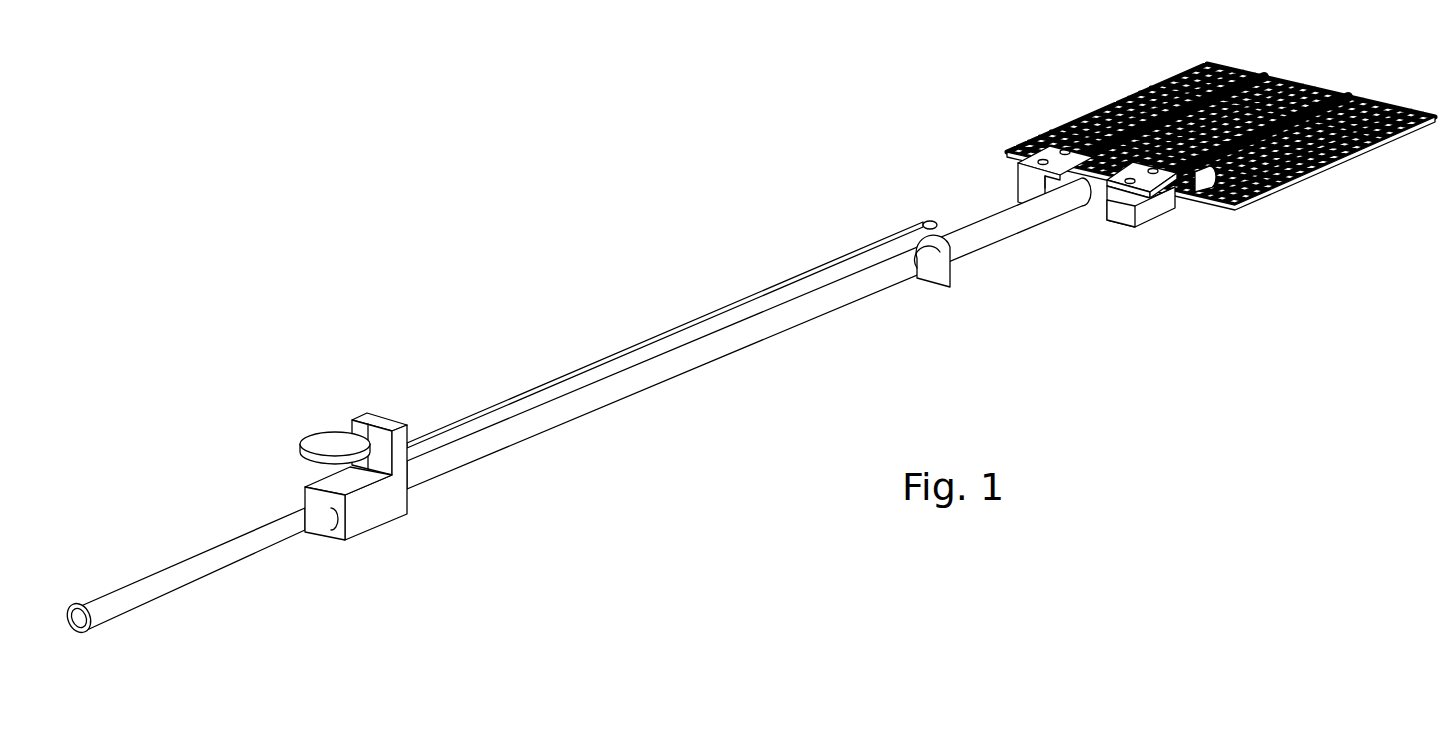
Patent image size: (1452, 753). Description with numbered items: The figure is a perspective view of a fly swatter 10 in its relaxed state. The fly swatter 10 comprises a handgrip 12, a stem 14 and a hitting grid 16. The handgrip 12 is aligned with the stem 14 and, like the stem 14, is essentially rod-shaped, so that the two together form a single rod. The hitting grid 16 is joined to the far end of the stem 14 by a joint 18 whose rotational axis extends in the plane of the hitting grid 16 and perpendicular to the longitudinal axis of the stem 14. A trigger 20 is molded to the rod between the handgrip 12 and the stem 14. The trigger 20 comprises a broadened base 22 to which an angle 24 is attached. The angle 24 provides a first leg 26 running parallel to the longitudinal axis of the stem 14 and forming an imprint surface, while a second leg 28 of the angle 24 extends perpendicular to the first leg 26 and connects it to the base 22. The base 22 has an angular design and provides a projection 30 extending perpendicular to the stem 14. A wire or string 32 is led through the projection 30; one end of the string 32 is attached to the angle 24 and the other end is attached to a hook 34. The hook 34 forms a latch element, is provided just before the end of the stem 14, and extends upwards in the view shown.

The fly swatter 10 is at (749, 367).
The handgrip 12 is at (213, 563).
The stem 14 is at (752, 330).
The hitting grid 16 is at (1296, 152).
The joint 18 is at (1118, 220).
The trigger 20 is at (314, 447).
The base 22 is at (305, 535).
The angle 24 is at (320, 393).
The first leg 26 is at (340, 440).
The second leg 28 is at (348, 467).
The projection 30 is at (402, 440).
The string 32 is at (652, 334).
The hook 34 is at (930, 222).